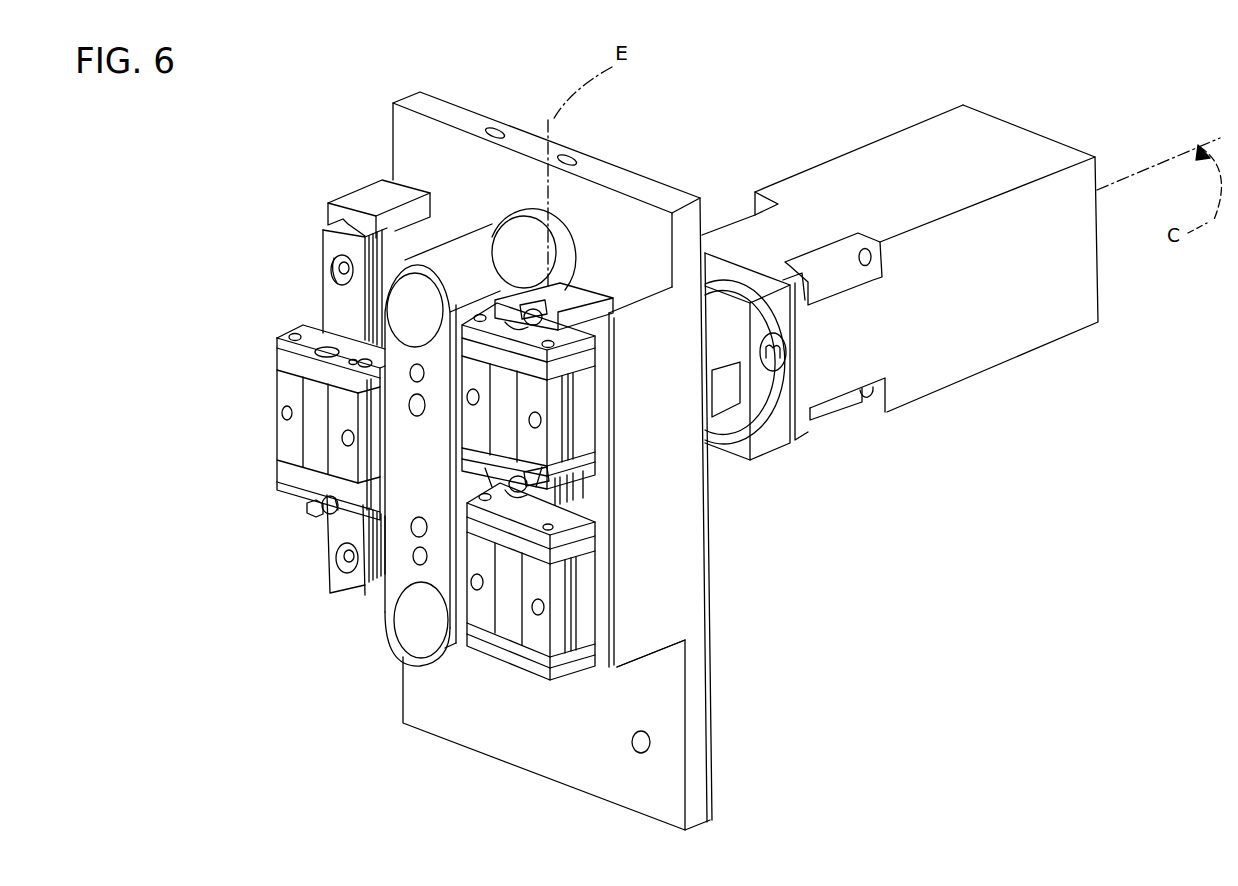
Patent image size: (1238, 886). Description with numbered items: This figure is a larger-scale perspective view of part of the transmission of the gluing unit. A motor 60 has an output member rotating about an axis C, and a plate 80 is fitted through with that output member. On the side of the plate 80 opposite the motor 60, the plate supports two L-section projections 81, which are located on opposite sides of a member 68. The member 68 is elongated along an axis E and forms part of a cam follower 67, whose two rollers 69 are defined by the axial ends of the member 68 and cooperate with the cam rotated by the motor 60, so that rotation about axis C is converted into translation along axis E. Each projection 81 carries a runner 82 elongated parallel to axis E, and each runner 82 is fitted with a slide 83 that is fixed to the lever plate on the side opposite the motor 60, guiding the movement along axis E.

The motor 60 is at (1013, 327).
The cam follower 67 is at (422, 182).
The member 68 is at (455, 270).
The rollers 69 is at (525, 247).
The plate 80 is at (547, 733).
The L-section projections 81 is at (375, 202).
The runners 82 is at (323, 313).
The slides 83 is at (290, 436).